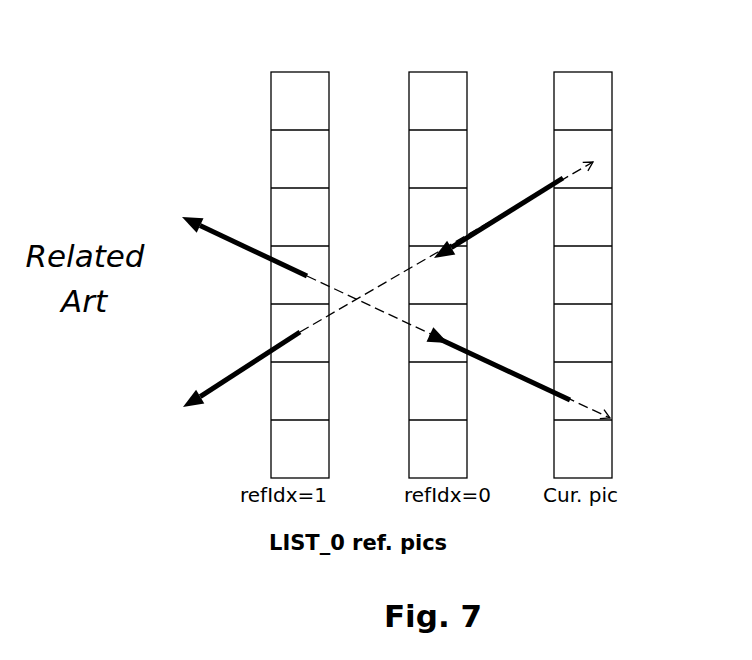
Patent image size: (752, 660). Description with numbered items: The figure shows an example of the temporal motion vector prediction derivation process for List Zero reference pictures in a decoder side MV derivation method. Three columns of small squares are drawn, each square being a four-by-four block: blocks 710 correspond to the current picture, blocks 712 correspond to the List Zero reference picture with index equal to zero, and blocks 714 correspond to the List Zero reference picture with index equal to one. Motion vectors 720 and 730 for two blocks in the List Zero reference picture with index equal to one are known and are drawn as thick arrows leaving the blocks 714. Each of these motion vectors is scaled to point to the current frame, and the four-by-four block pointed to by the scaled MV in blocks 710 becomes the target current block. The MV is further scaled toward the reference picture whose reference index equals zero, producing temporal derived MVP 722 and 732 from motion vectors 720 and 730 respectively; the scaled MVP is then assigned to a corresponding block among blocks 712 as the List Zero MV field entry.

The blocks of the current picture 710 is at (580, 60).
The blocks of List 0 reference picture with index equal to 0 712 is at (436, 60).
The blocks of List 0 reference picture with index equal to 1 714 is at (304, 60).
The motion vector 720 is at (243, 369).
The temporal derived MVP 722 is at (491, 219).
The motion vector 730 is at (256, 250).
The temporal derived MVP 732 is at (530, 379).